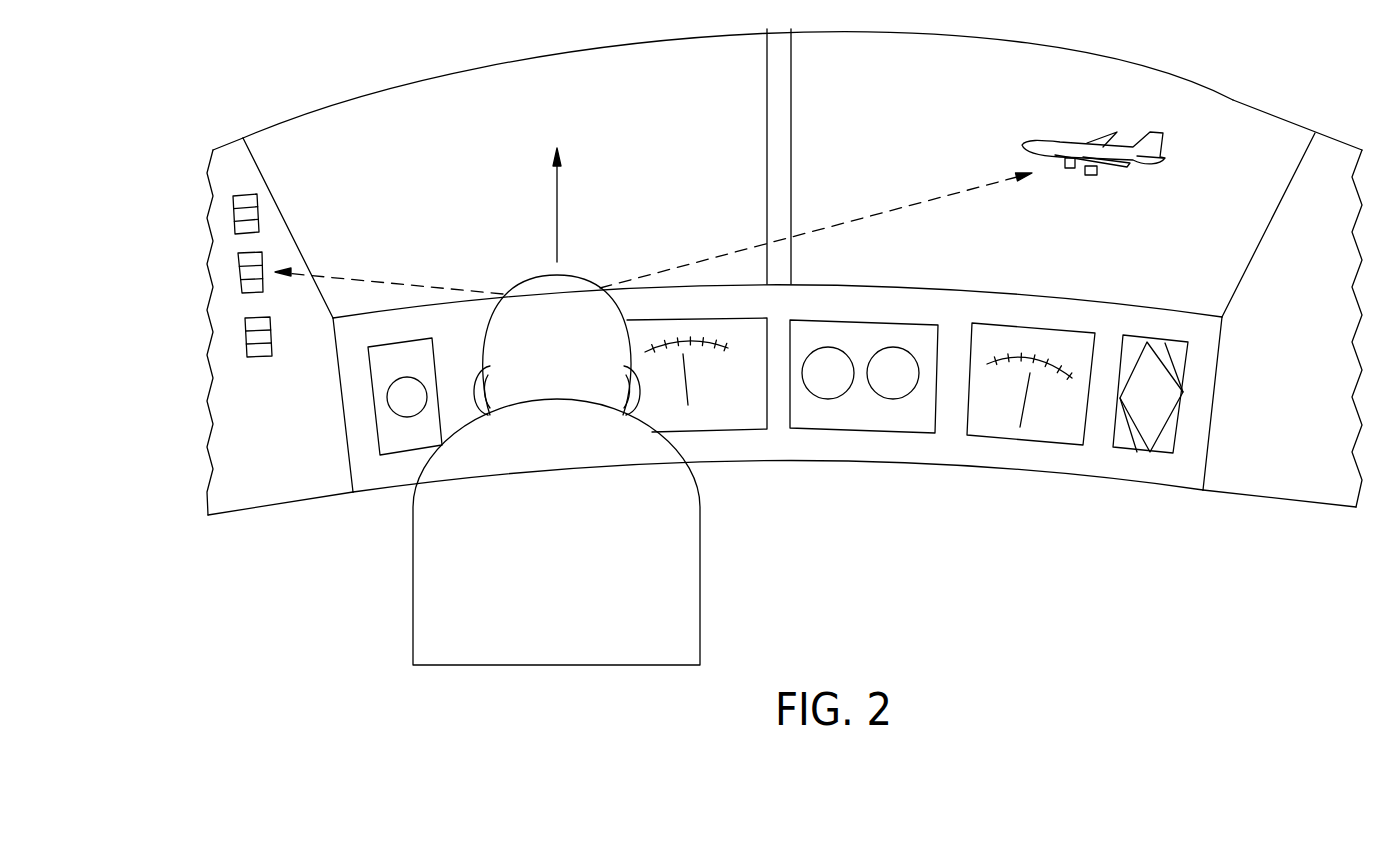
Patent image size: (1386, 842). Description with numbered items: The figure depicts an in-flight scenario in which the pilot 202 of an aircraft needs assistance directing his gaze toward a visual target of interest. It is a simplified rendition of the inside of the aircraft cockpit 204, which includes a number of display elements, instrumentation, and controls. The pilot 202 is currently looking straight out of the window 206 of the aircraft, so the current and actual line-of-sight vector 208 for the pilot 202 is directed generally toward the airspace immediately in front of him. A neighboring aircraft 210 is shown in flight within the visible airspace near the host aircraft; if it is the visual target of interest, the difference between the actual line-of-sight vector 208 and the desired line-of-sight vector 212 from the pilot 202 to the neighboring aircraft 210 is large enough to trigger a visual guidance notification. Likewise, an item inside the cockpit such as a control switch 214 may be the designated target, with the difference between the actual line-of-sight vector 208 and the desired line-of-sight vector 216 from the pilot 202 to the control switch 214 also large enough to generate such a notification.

The pilot 202 is at (413, 575).
The aircraft cockpit 204 is at (777, 431).
The window 206 is at (370, 130).
The actual line-of-sight vector 208 is at (558, 197).
The neighboring aircraft 210 is at (1090, 175).
The desired line-of-sight vector 212 is at (816, 217).
The control switch 214 is at (238, 258).
The desired line-of-sight vector 216 is at (389, 256).